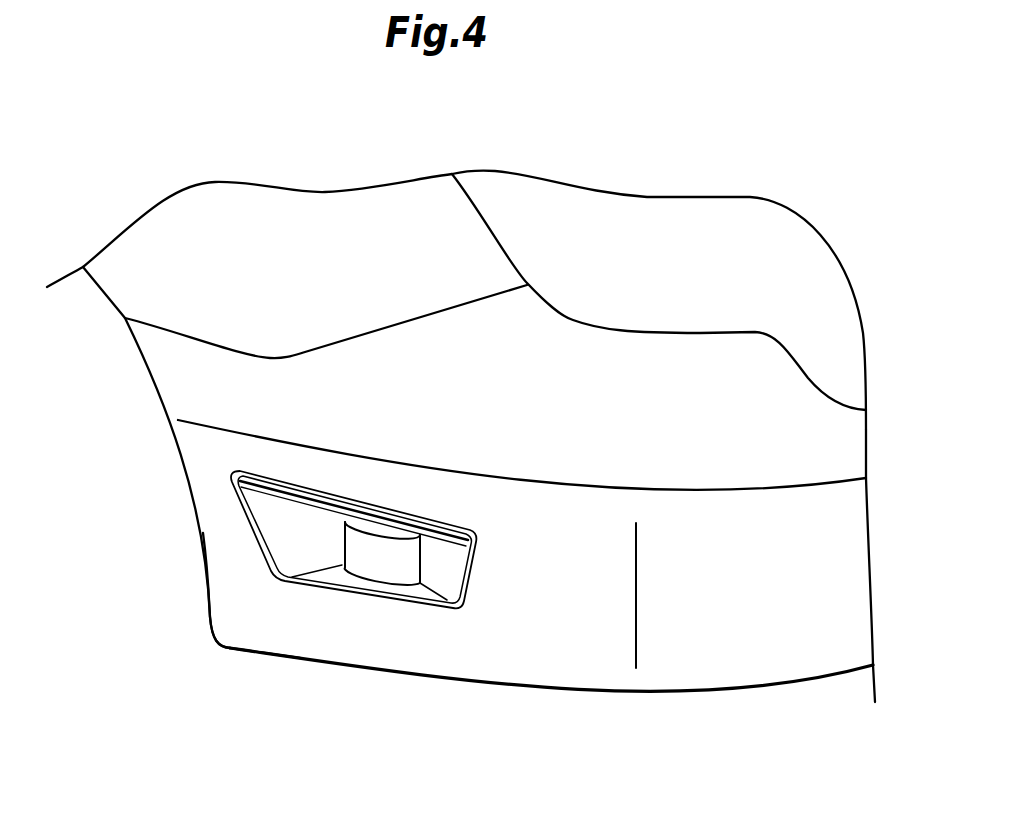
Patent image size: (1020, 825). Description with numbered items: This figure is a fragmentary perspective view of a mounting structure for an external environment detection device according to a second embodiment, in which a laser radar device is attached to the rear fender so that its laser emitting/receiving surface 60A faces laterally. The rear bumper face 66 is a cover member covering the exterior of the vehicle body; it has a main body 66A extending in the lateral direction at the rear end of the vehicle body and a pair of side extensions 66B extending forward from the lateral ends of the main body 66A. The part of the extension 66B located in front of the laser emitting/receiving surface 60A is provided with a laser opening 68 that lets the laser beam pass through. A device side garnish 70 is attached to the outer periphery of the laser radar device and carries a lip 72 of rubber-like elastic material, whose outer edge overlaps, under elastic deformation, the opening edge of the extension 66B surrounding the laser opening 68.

The laser emitting/receiving surface 60A is at (380, 553).
The rear bumper face 66 is at (596, 647).
The main body 66A is at (732, 660).
The side extension 66B is at (473, 667).
The laser opening 68 is at (357, 597).
The device side garnish 70 is at (335, 578).
The lip 72 is at (472, 578).